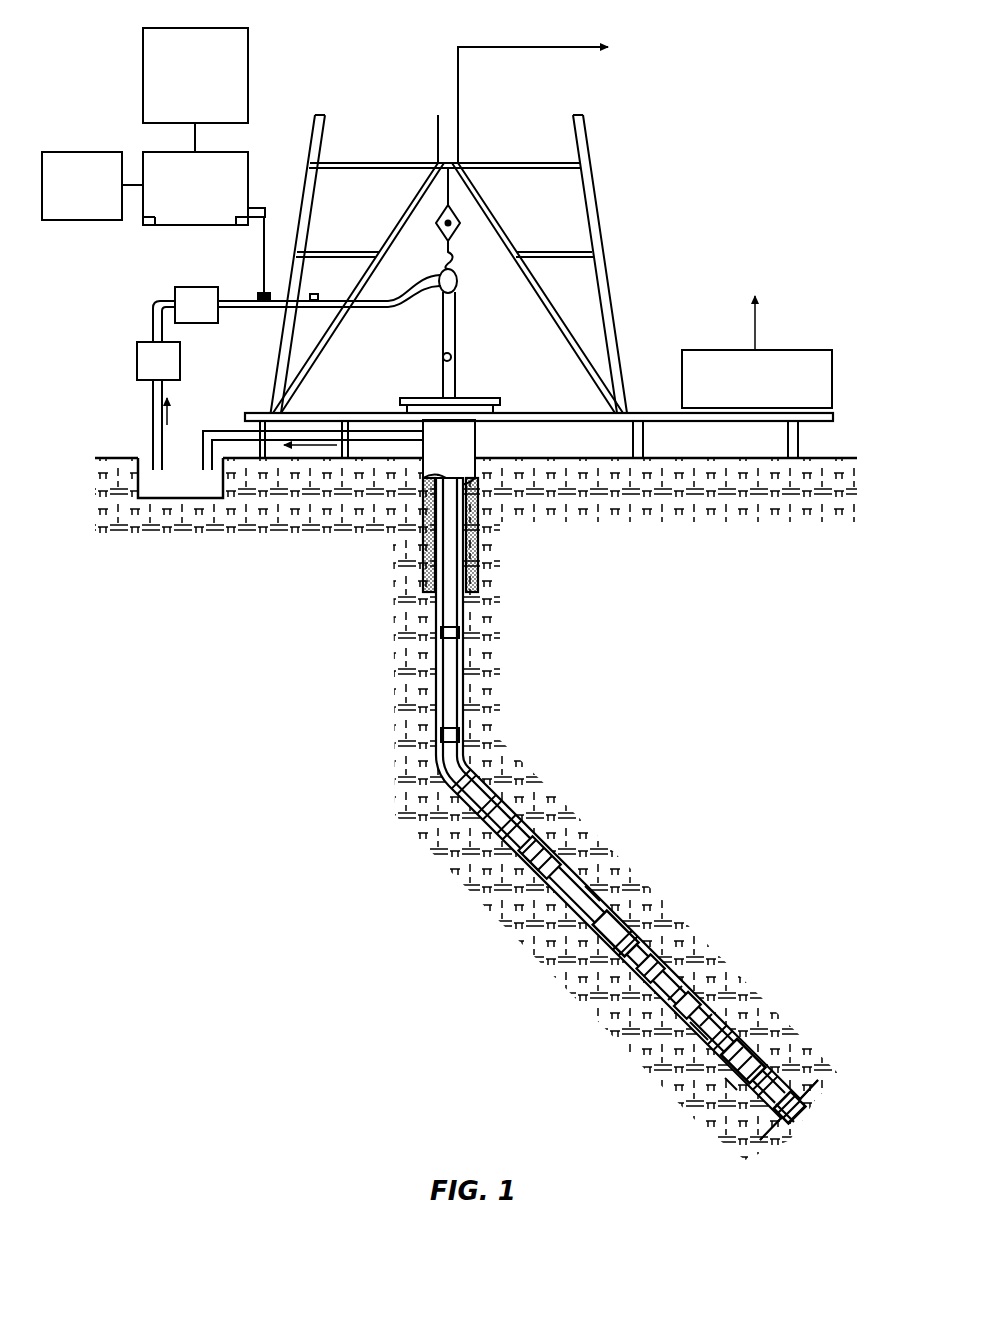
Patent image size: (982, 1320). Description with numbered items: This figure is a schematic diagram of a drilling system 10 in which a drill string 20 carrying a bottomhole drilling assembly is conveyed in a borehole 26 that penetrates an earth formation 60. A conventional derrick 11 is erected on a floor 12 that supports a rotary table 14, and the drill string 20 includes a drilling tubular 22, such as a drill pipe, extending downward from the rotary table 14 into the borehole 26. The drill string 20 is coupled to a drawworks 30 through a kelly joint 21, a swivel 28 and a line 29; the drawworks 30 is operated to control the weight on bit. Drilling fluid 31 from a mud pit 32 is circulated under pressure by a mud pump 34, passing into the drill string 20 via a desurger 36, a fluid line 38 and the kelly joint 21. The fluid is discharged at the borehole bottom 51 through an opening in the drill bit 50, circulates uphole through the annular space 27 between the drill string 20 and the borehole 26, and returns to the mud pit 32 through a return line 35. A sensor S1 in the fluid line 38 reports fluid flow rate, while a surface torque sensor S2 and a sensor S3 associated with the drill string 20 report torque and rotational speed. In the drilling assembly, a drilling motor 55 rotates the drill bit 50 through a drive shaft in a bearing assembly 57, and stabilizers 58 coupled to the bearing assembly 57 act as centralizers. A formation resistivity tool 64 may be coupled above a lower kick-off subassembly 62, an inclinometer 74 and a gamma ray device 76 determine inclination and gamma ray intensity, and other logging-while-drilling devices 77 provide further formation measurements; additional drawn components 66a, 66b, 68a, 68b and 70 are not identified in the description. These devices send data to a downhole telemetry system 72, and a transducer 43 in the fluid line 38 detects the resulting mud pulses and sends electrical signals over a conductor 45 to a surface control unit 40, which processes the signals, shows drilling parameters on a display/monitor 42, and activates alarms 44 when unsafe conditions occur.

The drilling system 10 is at (368, 66).
The derrick 11 is at (605, 268).
The floor 12 is at (630, 412).
The rotary table 14 is at (467, 395).
The drill string 20 is at (460, 607).
The kelly joint 21 is at (457, 342).
The drilling tubular 22 is at (430, 658).
The borehole 26 is at (488, 765).
The annular space 27 is at (482, 793).
The swivel 28 is at (437, 292).
The line 29 is at (460, 145).
The drawworks 30 is at (810, 350).
The drilling fluid 31 is at (150, 500).
The mud pit 32 is at (212, 490).
The mud pump 34 is at (137, 362).
The return line 35 is at (390, 434).
The desurger 36 is at (190, 287).
The fluid line 38 is at (280, 308).
The surface control unit 40 is at (167, 152).
The display/monitor 42 is at (197, 28).
The transducer 43 is at (262, 294).
The alarms 44 is at (103, 220).
The conductor 45 is at (258, 208).
The drill bit 50 is at (802, 1100).
The borehole bottom 51 is at (773, 1133).
The drilling motor 55 is at (597, 892).
The bearing assembly 57 is at (726, 1086).
The stabilizers 58 is at (630, 930).
The earth formation 60 is at (321, 870).
The lower kick-off subassembly 62 is at (740, 1052).
The formation resistivity tool 64 is at (672, 1000).
The sensor 66a is at (618, 955).
The sensor 66b is at (700, 1020).
The sensor 68a is at (652, 985).
The sensor 68b is at (652, 978).
The downhole tool 70 is at (520, 848).
The downhole telemetry system 72 is at (443, 733).
The inclinometer 74 is at (690, 1000).
The gamma ray device 76 is at (706, 1018).
The logging-while-drilling devices 77 is at (531, 886).
The sensor S1 is at (314, 294).
The surface torque sensor S2 is at (443, 357).
The sensor S3 is at (493, 397).